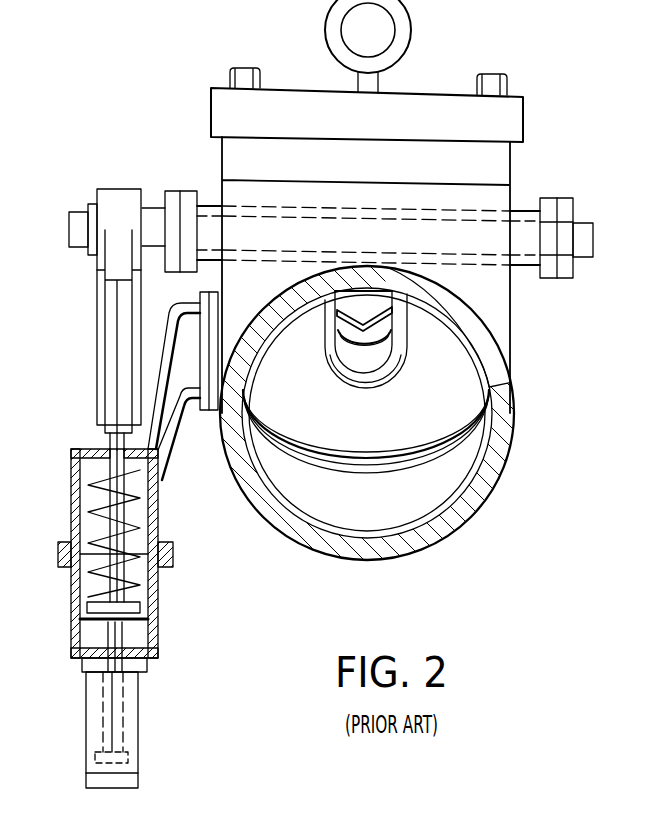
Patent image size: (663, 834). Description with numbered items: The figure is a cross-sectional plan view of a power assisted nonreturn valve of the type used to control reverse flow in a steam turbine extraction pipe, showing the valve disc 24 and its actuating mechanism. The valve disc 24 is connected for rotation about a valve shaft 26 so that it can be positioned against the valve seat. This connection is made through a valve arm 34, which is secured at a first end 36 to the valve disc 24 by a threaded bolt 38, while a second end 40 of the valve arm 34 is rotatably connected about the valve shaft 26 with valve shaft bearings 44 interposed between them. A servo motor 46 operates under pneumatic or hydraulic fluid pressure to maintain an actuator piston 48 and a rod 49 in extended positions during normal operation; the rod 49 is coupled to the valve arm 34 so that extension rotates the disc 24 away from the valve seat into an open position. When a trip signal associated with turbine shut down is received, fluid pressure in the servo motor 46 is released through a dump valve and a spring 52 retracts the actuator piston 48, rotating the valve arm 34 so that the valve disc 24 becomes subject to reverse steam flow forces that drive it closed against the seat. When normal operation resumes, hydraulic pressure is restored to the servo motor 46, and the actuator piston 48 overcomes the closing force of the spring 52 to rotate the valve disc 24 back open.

The valve disc 24 is at (406, 432).
The valve shaft 26 is at (521, 209).
The valve arm 34 is at (326, 303).
The first end 36 is at (352, 372).
The threaded bolt 38 is at (397, 322).
The second end 40 is at (212, 205).
The valve shaft bearings 44 is at (188, 215).
The servo motor 46 is at (138, 740).
The actuator piston 48 is at (92, 758).
The rod 49 is at (128, 700).
The spring 52 is at (97, 482).